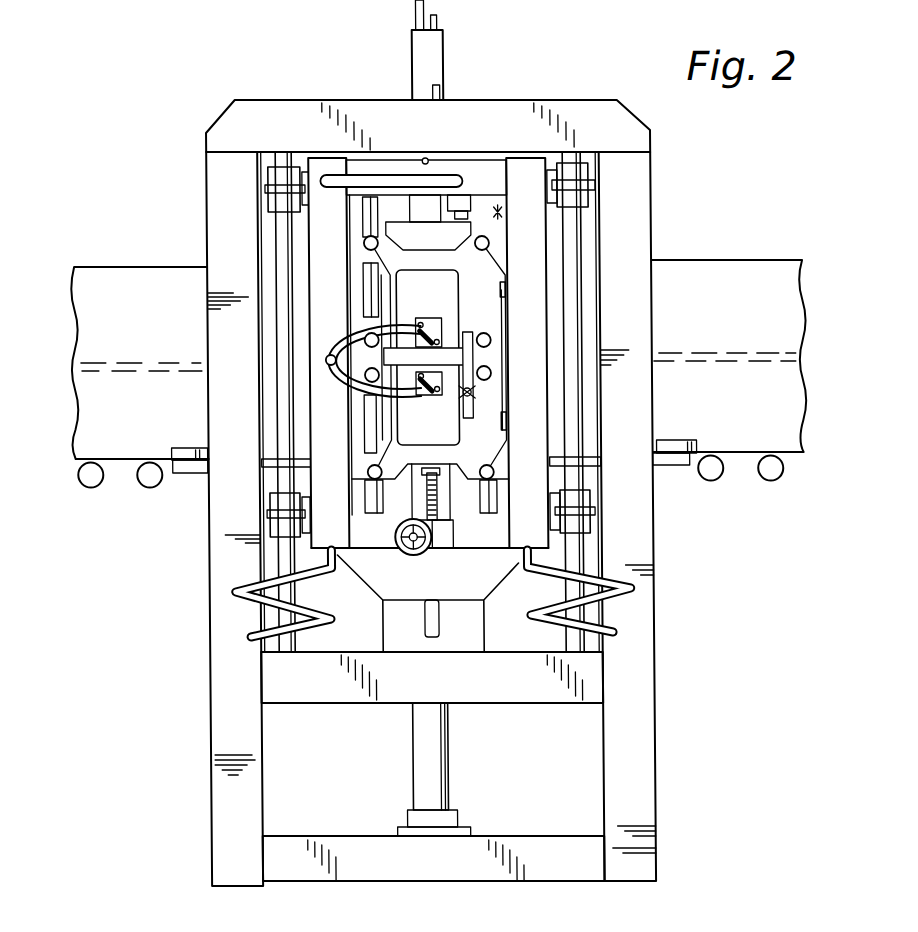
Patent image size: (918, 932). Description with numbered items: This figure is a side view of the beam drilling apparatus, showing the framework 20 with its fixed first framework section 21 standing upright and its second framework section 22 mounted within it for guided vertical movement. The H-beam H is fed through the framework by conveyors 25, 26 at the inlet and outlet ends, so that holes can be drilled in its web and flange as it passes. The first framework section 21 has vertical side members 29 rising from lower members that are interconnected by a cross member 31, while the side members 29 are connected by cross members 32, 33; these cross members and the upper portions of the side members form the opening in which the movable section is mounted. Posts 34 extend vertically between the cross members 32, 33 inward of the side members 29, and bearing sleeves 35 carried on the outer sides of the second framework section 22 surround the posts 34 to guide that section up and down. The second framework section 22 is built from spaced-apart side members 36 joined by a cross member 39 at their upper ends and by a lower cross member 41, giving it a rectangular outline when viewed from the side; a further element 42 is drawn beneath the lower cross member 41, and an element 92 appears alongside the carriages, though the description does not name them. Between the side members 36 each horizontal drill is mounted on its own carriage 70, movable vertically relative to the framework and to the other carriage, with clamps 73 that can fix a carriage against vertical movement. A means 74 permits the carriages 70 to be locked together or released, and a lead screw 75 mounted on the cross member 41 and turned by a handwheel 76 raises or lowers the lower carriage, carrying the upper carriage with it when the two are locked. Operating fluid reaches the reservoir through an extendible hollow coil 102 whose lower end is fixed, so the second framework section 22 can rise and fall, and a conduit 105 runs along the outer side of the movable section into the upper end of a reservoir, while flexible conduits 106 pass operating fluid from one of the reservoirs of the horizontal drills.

The framework 20 is at (200, 166).
The first framework section 21 is at (198, 573).
The second framework section 22 is at (560, 404).
The conveyor 25 is at (768, 481).
The conveyor 26 is at (92, 488).
The vertical side members 29 is at (656, 542).
The cross member 31 is at (317, 884).
The cross member 32 is at (323, 705).
The cross member 33 is at (593, 98).
The posts 34 is at (282, 257).
The bearing sleeves 35 is at (588, 201).
The side members 36 is at (307, 320).
The cross member 39 is at (468, 162).
The cross member 41 is at (502, 590).
The support rod 42 is at (464, 744).
The carriage 70 is at (500, 250).
The clamps 73 is at (364, 243).
The means for locking carriages 74 is at (474, 391).
The lead screw 75 is at (434, 496).
The handwheel 76 is at (410, 556).
The belt 92 is at (502, 347).
The hollow coil 102 is at (638, 594).
The conduit 105 is at (376, 182).
The flexible conduits 106 is at (333, 378).
The H-beam H is at (760, 258).